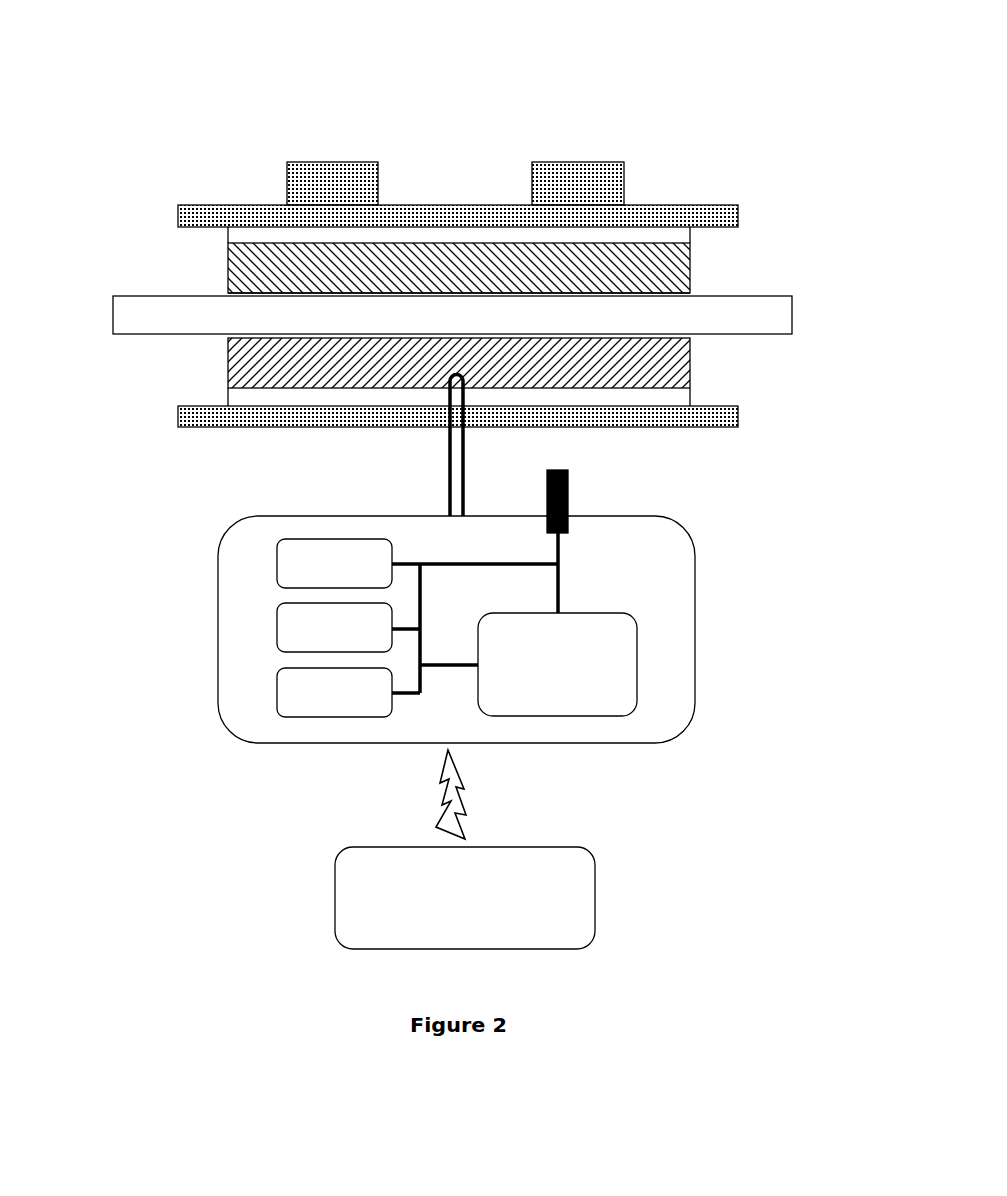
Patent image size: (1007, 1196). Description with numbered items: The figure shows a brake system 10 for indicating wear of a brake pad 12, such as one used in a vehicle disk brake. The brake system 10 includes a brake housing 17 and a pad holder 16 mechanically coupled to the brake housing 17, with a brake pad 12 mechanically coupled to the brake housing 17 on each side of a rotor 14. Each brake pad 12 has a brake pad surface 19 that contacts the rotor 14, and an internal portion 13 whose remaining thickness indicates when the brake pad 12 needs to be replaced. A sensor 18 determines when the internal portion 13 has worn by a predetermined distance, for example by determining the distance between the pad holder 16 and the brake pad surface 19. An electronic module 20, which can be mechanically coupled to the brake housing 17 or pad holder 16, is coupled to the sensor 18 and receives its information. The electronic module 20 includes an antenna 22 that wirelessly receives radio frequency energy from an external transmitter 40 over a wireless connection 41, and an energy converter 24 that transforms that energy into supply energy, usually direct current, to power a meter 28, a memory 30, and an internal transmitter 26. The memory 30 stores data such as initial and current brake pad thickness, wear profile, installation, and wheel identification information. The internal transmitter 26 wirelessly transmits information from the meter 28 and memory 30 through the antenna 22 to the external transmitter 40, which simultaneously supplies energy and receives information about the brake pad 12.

The brake system 10 is at (253, 103).
The brake pad 12 is at (645, 277).
The internal portion 13 is at (250, 277).
The rotor 14 is at (452, 315).
The pad holder 16 is at (410, 205).
The brake housing 17 is at (648, 205).
The sensor 18 is at (467, 380).
The brake pad surface 19 is at (299, 290).
The electronic module 20 is at (215, 552).
The antenna 22 is at (569, 508).
The energy converter 24 is at (563, 718).
The internal transmitter 26 is at (277, 564).
The meter 28 is at (277, 629).
The memory 30 is at (277, 691).
The external transmitter 40 is at (465, 898).
The wireless connection 41 is at (437, 805).